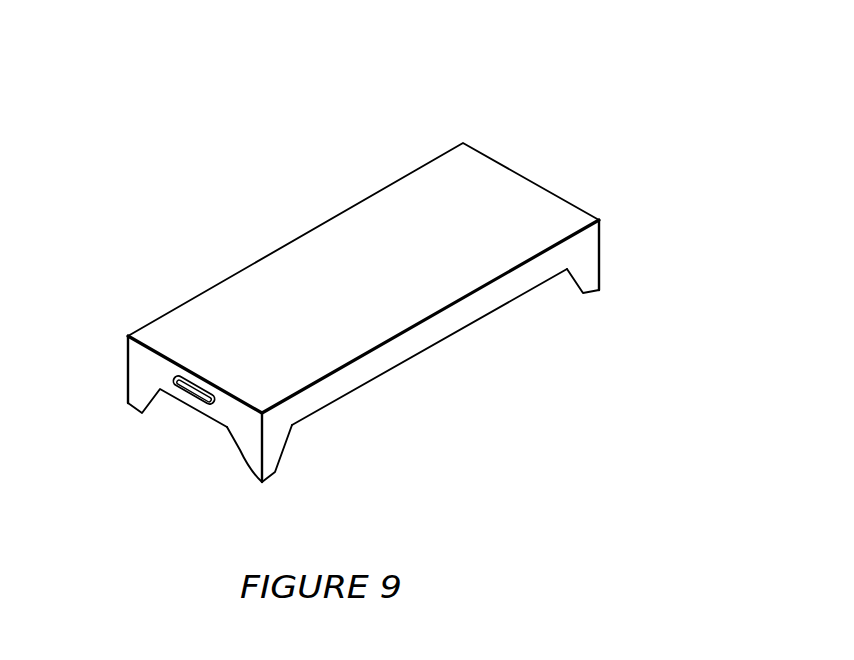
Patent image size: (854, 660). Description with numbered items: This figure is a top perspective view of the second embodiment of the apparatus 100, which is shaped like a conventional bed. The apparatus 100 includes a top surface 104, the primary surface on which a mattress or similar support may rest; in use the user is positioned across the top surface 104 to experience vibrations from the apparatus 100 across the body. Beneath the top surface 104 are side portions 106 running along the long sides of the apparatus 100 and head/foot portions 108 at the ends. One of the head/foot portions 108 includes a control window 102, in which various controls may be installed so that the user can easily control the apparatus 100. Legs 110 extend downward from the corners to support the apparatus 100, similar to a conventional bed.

The apparatus 100 is at (641, 132).
The control window 102 is at (190, 404).
The top surface 104 is at (383, 302).
The side portions 106 is at (428, 337).
The head/foot portions 108 is at (153, 370).
The legs 110 is at (270, 468).